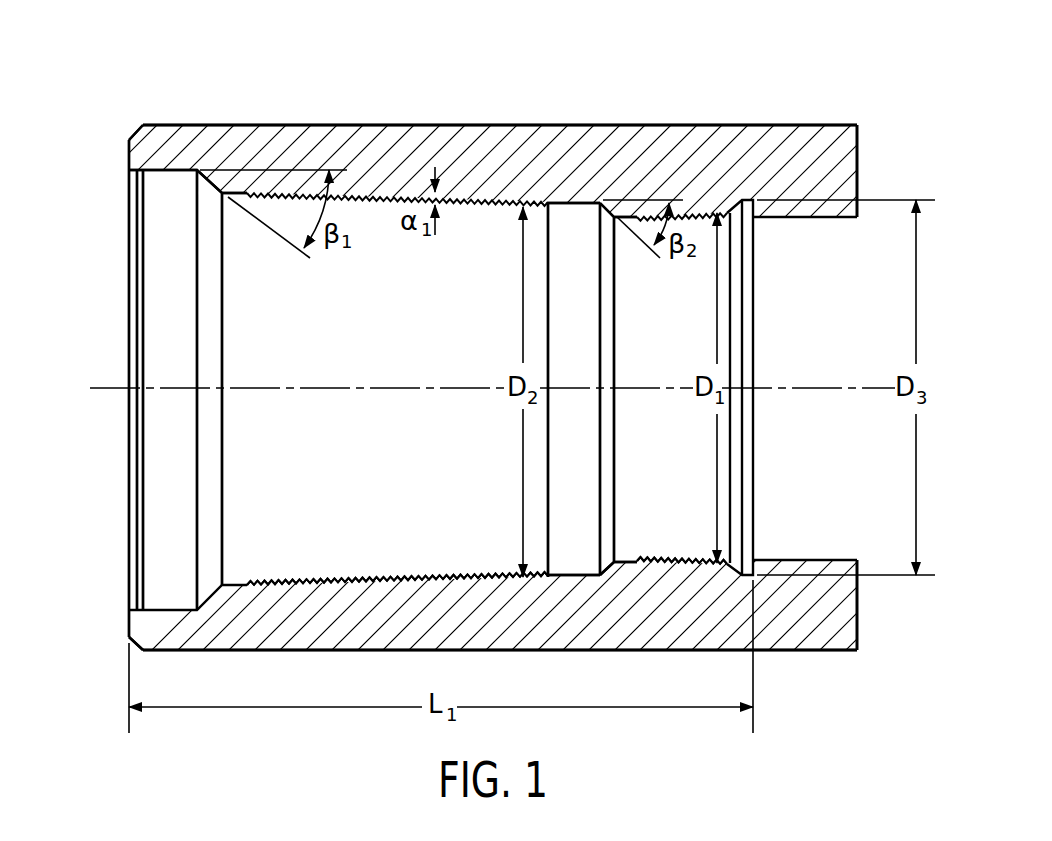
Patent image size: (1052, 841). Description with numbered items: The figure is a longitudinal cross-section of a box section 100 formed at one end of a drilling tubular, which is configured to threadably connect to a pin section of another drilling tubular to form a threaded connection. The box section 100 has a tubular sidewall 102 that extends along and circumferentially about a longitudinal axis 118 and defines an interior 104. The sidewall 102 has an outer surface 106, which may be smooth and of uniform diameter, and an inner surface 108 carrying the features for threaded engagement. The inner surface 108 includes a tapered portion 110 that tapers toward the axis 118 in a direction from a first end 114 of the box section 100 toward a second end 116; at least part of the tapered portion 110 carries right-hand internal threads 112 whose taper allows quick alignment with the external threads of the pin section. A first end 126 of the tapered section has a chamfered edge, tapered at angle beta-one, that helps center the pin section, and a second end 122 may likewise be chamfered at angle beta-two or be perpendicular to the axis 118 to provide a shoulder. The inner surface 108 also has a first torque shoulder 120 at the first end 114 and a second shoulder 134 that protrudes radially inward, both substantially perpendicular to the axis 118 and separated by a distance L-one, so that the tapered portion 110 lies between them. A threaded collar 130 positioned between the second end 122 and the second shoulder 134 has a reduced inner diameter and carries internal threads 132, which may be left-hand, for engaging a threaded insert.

The box section 100 is at (580, 68).
The sidewall 102 is at (670, 147).
The interior 104 is at (448, 322).
The outer surface 106 is at (277, 125).
The inner surface 108 is at (247, 585).
The tapered portion 110 is at (363, 587).
The internal threads 112 is at (348, 583).
The first end 114 is at (118, 664).
The second end 116 is at (875, 667).
The longitudinal axis 118 is at (803, 388).
The first torque shoulder 120 is at (130, 628).
The second end of the tapered section 122 is at (601, 204).
The first end of the tapered section 126 is at (202, 173).
The threaded collar 130 is at (643, 563).
The internal threads 132 is at (660, 562).
The second shoulder 134 is at (758, 200).